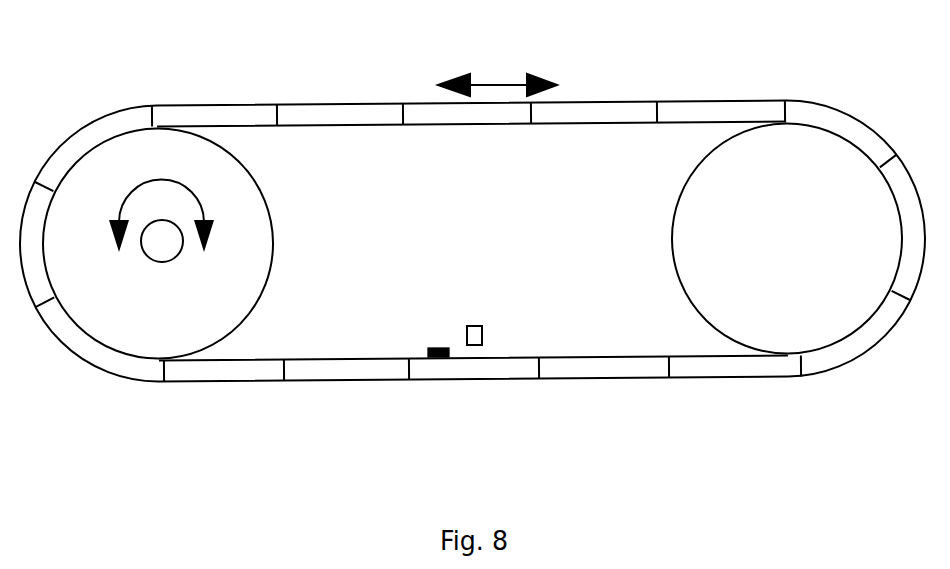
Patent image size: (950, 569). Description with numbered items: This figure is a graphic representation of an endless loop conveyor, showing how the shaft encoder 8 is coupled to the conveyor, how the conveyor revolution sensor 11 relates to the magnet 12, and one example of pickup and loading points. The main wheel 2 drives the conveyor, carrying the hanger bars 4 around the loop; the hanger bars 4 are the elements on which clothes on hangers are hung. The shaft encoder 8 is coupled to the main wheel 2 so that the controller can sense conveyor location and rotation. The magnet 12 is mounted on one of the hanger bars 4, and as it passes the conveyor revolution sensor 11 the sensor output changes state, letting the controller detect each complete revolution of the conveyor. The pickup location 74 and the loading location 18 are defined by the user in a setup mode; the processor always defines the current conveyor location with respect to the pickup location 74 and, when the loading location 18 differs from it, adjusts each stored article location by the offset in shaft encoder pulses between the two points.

The main wheel 2 is at (280, 219).
The hanger bars 4 is at (333, 95).
The shaft encoder 8 is at (167, 213).
The conveyor revolution sensor 11 is at (487, 333).
The magnet 12 is at (422, 342).
The pickup location 74 is at (142, 400).
The loading location 18 is at (798, 400).